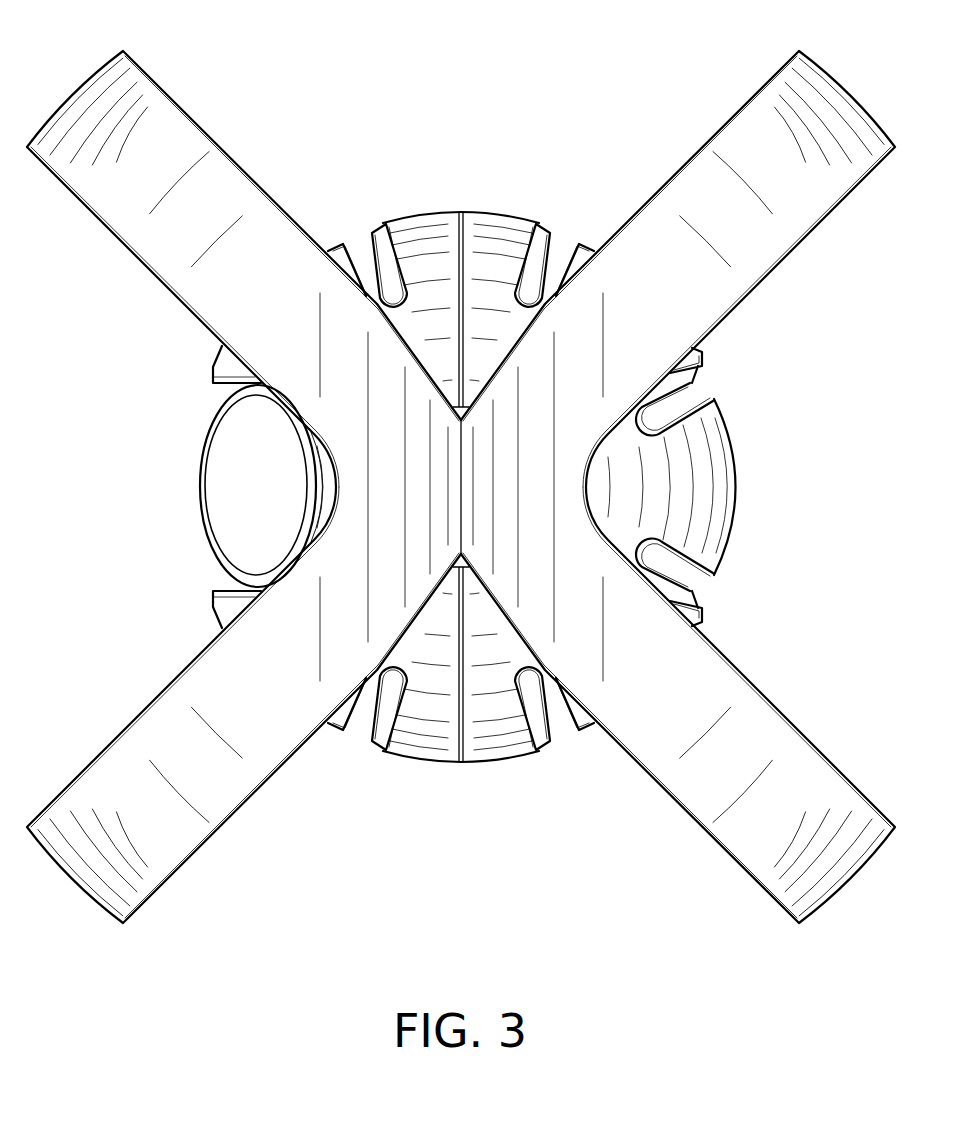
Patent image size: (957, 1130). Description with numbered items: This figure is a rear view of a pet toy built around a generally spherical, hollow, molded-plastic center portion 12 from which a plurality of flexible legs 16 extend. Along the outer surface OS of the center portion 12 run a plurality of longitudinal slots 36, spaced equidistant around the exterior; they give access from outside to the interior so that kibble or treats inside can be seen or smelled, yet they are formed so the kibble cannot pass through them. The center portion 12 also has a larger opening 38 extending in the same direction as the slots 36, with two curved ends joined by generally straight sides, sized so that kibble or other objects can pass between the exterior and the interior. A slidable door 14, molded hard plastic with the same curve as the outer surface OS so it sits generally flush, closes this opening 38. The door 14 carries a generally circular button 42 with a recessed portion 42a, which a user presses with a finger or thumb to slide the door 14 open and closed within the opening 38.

The center portion 12 is at (474, 210).
The slidable door 14 is at (200, 500).
The flexible legs 16 is at (195, 120).
The slots 36 is at (364, 255).
The opening 38 is at (218, 577).
The button 42 is at (233, 437).
The recessed portion 42a is at (233, 540).
The outer surface OS is at (739, 455).